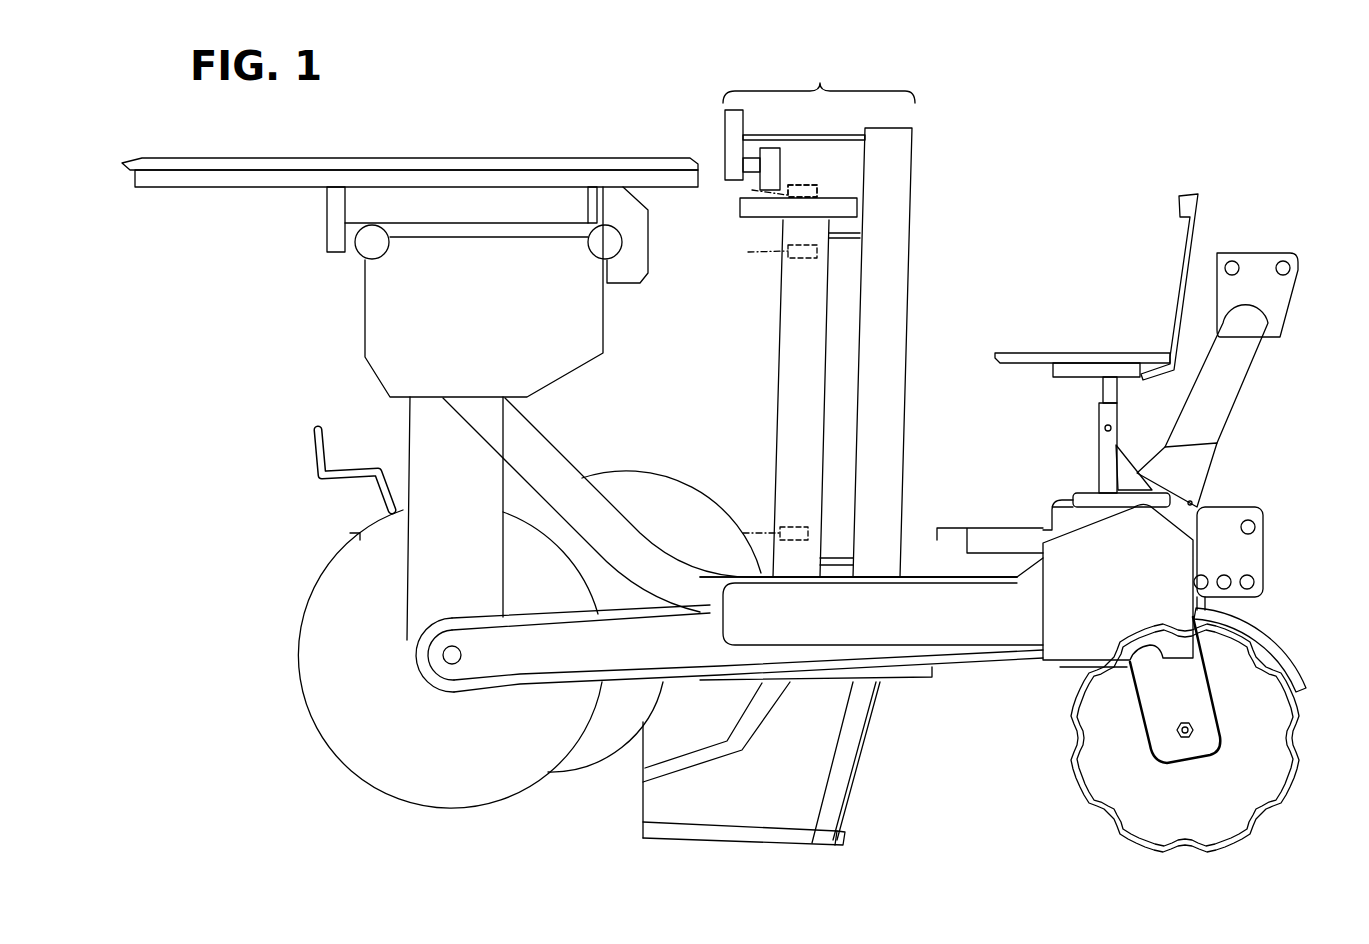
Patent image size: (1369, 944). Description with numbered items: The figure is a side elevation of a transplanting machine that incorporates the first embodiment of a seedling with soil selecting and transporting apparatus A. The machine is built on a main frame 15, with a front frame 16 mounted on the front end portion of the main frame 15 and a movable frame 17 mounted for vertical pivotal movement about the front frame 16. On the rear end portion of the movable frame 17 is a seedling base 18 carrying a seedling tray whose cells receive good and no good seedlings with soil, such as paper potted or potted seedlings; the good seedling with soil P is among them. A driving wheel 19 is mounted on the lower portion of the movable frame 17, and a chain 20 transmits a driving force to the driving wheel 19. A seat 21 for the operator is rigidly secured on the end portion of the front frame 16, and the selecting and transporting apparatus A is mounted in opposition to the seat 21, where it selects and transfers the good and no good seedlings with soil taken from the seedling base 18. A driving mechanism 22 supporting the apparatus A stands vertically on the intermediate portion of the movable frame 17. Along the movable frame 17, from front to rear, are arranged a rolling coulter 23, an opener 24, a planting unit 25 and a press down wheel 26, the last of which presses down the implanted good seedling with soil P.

The main frame 15 is at (958, 613).
The front frame 16 is at (1222, 388).
The movable frame 17 is at (613, 537).
The seedling base 18 is at (445, 163).
The driving wheel 19 is at (393, 755).
The chain 20 is at (520, 688).
The seat 21 is at (1073, 353).
The driving mechanism 22 is at (897, 315).
The rolling coulter 23 is at (1130, 783).
The opener 24 is at (727, 835).
The planting unit 25 is at (745, 525).
The press down wheel 26 is at (602, 722).
The seedling with soil selecting and transporting apparatus A is at (819, 75).
The good seedling with soil P is at (790, 197).